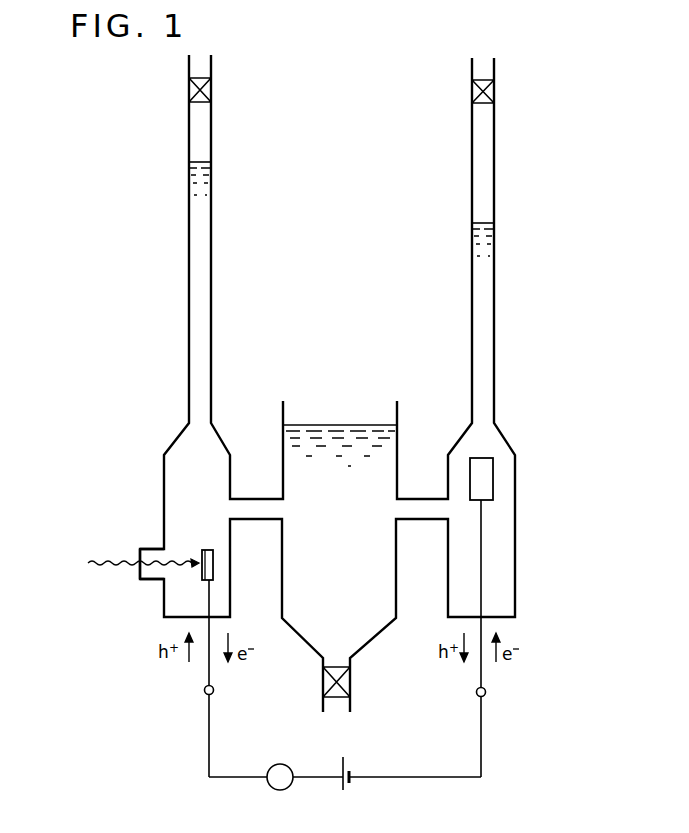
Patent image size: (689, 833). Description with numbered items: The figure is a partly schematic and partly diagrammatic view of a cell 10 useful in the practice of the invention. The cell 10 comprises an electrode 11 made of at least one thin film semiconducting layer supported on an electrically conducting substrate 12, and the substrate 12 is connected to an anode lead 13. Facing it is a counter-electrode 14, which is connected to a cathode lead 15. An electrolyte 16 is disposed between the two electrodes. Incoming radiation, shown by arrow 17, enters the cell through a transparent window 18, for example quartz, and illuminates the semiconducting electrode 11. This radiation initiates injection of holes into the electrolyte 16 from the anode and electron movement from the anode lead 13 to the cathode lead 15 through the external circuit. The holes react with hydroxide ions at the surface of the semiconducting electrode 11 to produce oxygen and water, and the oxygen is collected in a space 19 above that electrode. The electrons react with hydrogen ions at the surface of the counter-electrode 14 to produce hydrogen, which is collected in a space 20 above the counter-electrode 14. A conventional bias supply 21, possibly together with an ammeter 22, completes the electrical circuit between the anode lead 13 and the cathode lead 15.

The cell 10 is at (343, 560).
The electrode 11 is at (200, 556).
The electrically conducting substrate 12 is at (214, 568).
The anode lead 13 is at (204, 690).
The counter-electrode 14 is at (480, 484).
The cathode lead 15 is at (486, 692).
The electrolyte 16 is at (385, 449).
The incoming radiation 17 is at (113, 560).
The transparent window 18 is at (141, 574).
The space 19 is at (205, 138).
The space 20 is at (485, 153).
The bias supply 21 is at (343, 790).
The ammeter 22 is at (280, 790).